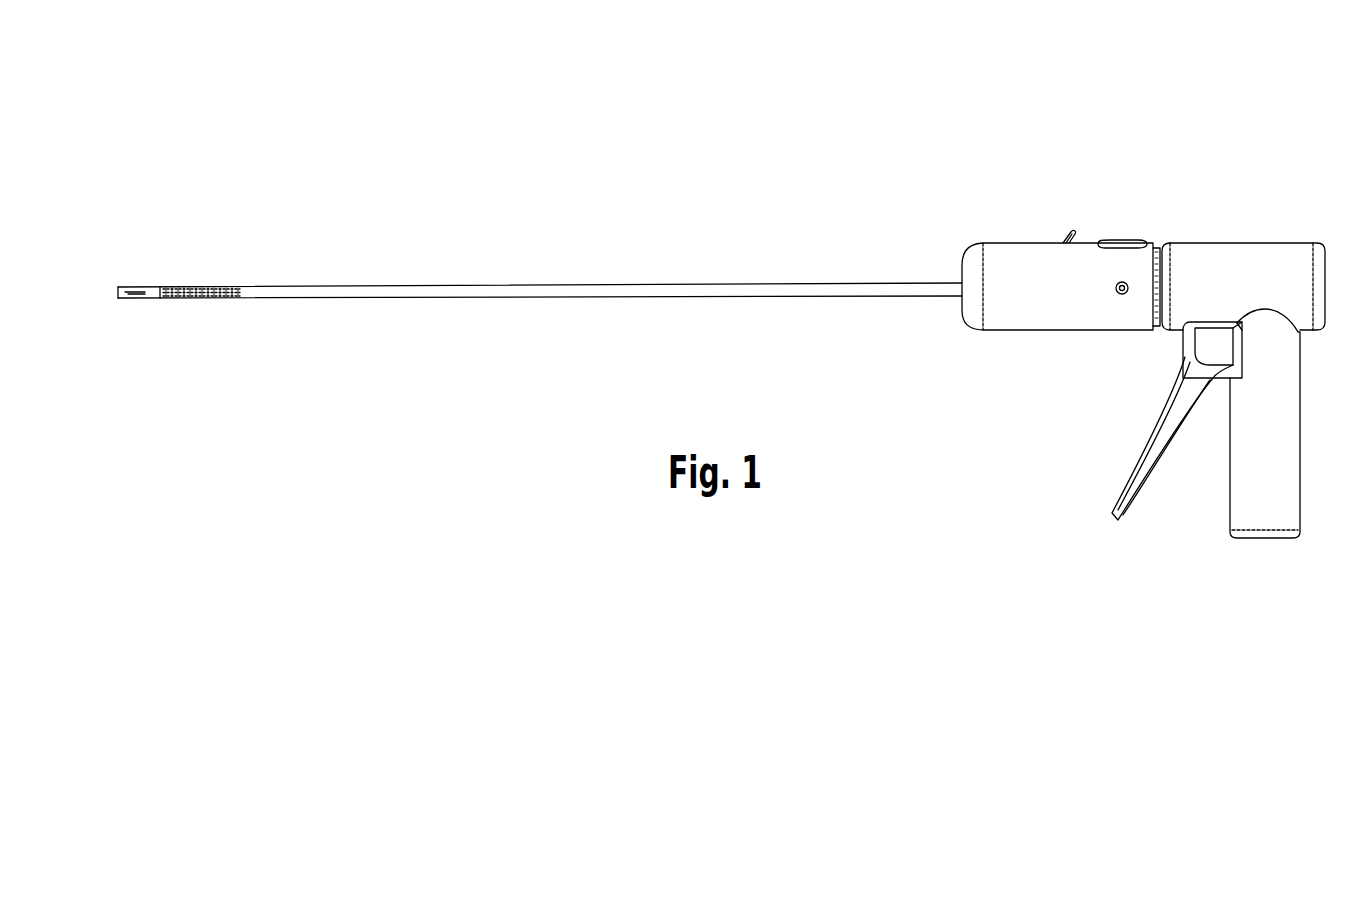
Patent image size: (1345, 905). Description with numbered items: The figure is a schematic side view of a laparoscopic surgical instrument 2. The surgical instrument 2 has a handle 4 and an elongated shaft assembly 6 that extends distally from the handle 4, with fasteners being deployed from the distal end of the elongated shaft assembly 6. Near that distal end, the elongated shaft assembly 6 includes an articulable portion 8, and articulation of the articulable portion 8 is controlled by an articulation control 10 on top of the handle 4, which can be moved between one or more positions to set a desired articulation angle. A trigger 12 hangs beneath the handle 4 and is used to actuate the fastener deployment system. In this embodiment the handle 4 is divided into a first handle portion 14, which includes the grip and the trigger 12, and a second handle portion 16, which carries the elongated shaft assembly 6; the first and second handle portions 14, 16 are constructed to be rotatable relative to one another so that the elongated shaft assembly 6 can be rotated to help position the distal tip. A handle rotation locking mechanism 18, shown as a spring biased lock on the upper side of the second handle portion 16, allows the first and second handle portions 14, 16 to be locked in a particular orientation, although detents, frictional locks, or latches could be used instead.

The surgical instrument 2 is at (198, 195).
The handle 4 is at (975, 87).
The elongated shaft assembly 6 is at (542, 282).
The articulable portion 8 is at (162, 273).
The articulation control 10 is at (1060, 241).
The trigger 12 is at (1143, 433).
The first handle portion 14 is at (1323, 172).
The second handle portion 16 is at (975, 172).
The handle rotation locking mechanism 18 is at (1127, 241).